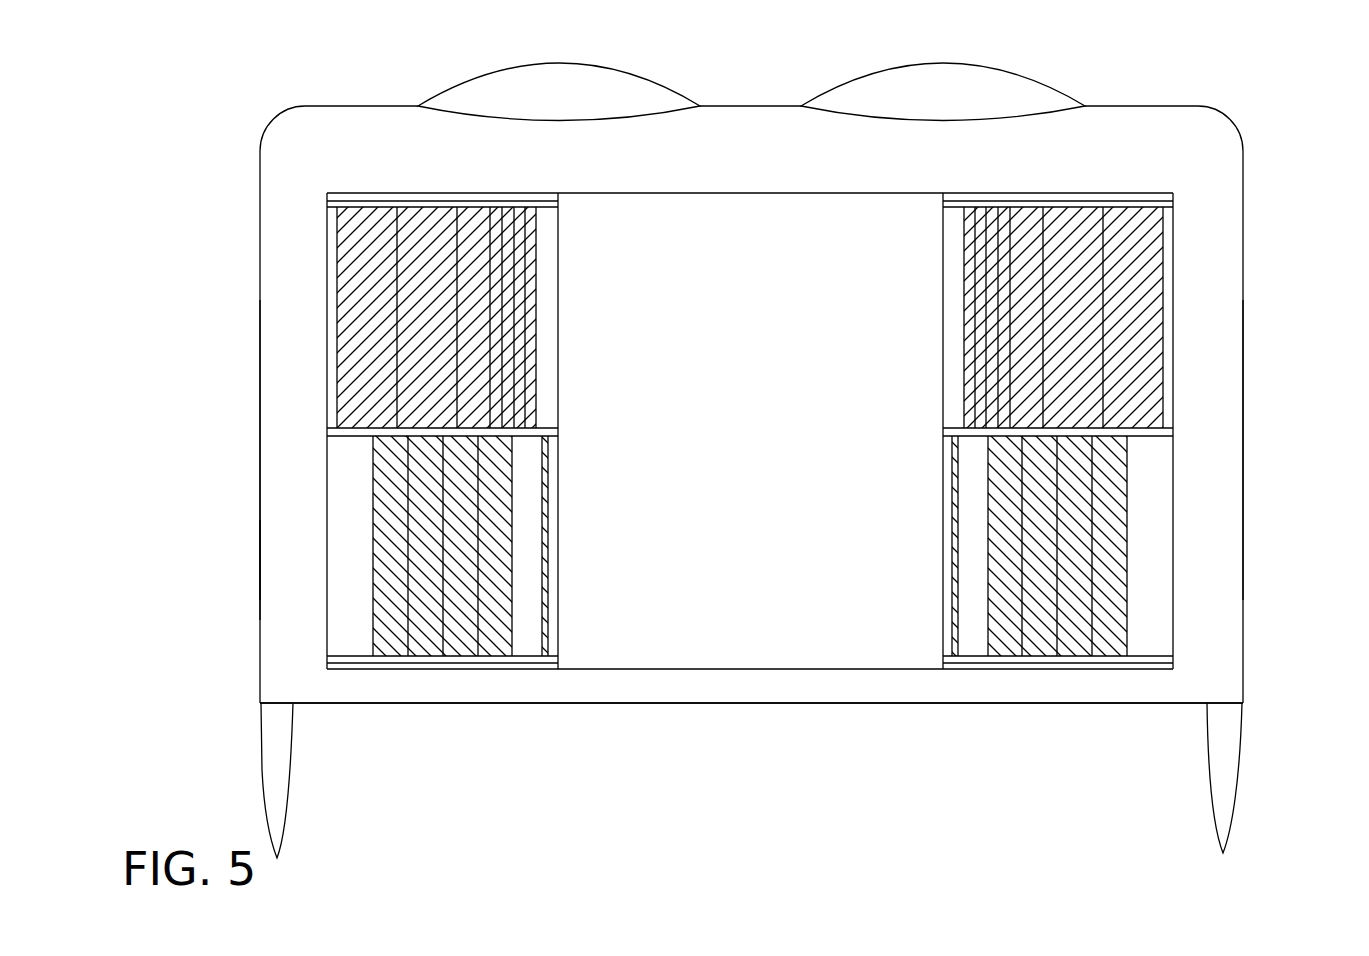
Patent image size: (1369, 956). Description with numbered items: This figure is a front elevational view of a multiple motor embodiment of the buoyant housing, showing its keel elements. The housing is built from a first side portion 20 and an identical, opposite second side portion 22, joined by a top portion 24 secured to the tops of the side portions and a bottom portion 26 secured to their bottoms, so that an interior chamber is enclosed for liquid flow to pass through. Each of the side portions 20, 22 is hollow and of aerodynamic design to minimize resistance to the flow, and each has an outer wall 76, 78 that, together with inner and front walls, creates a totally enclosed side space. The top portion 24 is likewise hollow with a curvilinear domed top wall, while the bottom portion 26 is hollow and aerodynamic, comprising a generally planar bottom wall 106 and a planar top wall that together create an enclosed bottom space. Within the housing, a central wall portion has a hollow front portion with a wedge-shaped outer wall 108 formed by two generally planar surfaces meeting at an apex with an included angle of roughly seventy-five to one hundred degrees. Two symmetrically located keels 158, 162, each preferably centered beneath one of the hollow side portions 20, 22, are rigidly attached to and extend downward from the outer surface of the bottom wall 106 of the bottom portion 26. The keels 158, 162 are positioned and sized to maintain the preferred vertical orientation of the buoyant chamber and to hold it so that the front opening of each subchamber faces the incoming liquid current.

The first side portion 20 is at (1223, 308).
The second side portion 22 is at (273, 556).
The top portion 24 is at (757, 85).
The bottom portion 26 is at (667, 693).
The outer wall 76 is at (1243, 460).
The outer wall 78 is at (260, 452).
The bottom wall 106 is at (493, 703).
The wedge-shaped outer wall 108 is at (848, 648).
The keel 158 is at (1212, 783).
The keel 162 is at (265, 792).